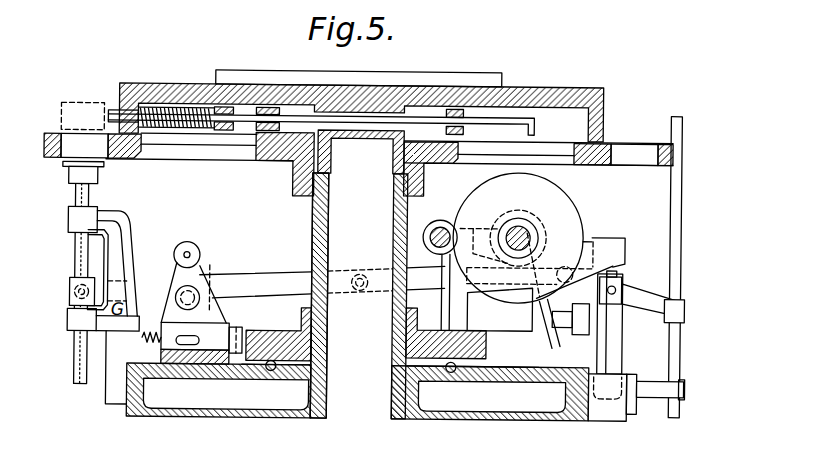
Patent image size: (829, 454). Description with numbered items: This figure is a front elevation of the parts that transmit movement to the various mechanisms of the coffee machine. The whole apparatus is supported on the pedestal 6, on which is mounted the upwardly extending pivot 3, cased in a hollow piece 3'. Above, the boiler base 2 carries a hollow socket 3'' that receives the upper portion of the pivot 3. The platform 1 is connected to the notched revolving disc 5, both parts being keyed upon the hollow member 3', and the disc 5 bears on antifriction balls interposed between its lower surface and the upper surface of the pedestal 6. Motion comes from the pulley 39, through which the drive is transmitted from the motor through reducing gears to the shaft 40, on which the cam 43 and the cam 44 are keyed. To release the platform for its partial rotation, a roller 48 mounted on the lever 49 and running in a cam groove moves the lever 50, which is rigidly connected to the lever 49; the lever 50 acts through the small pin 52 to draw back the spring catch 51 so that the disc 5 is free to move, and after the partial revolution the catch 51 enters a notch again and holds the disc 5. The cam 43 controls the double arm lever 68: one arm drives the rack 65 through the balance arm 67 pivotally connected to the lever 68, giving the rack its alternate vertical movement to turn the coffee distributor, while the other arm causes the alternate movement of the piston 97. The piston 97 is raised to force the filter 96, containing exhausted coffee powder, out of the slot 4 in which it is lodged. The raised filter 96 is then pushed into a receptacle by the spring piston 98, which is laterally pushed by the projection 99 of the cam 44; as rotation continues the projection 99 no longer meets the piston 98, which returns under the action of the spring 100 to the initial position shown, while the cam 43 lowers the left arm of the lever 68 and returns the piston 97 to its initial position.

The platform 1 is at (233, 161).
The boiler base 2 is at (580, 92).
The pivot 3 is at (359, 296).
The hollow piece 3' is at (299, 296).
The hollow socket 3'' is at (361, 152).
The slot 4 is at (75, 152).
The notched revolving disc 5 is at (256, 347).
The pedestal 6 is at (357, 392).
The pulley 39 is at (622, 346).
The shaft 40 is at (524, 236).
The cam 43 is at (477, 223).
The cam 44 is at (620, 194).
The roller 48 is at (187, 243).
The lever 49 is at (176, 267).
The lever 50 is at (208, 289).
The spring catch 51 is at (233, 356).
The pin 52 is at (191, 347).
The rack 65 is at (681, 237).
The balance arm 67 is at (643, 291).
The double arm lever 68 is at (262, 280).
The filter 96 is at (83, 106).
The piston 97 is at (75, 256).
The spring piston 98 is at (513, 124).
The projection 99 is at (607, 246).
The spring 100 is at (184, 126).